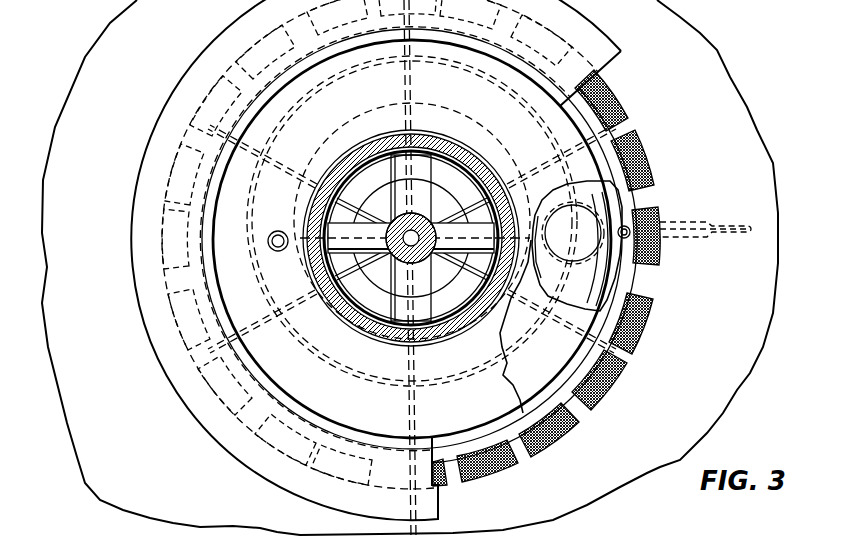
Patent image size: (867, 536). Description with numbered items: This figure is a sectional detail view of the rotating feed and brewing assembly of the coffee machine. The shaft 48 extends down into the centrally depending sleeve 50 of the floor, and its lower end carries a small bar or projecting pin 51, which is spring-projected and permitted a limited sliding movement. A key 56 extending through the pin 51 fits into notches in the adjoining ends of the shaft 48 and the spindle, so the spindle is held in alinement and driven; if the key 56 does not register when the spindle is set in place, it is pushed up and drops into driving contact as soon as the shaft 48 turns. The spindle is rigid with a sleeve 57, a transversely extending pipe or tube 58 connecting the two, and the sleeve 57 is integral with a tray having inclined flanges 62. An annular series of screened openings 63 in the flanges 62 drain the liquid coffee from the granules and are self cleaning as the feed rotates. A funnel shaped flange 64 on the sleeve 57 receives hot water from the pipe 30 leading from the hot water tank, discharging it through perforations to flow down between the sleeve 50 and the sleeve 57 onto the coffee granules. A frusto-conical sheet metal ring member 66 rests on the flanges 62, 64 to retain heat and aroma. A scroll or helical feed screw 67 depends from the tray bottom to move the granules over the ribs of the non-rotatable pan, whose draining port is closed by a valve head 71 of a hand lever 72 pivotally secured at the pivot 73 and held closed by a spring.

The pipe 30 is at (278, 251).
The shaft 48 is at (398, 262).
The sleeve 50 is at (484, 156).
The bar or projecting pin 51 is at (420, 262).
The key 56 is at (413, 228).
The sleeve 57 is at (454, 137).
The transversely extending pipe or tube 58 is at (352, 230).
The inclined flanges 62 is at (735, 374).
The screened openings 63 is at (645, 150).
The funnel shaped flange 64 is at (505, 360).
The frusto-conical sheet metal ring member 66 is at (228, 437).
The scroll or helical feed screw 67 is at (443, 206).
The valve head 71 is at (574, 252).
The hand lever 72 is at (672, 228).
The pivot 73 is at (622, 240).